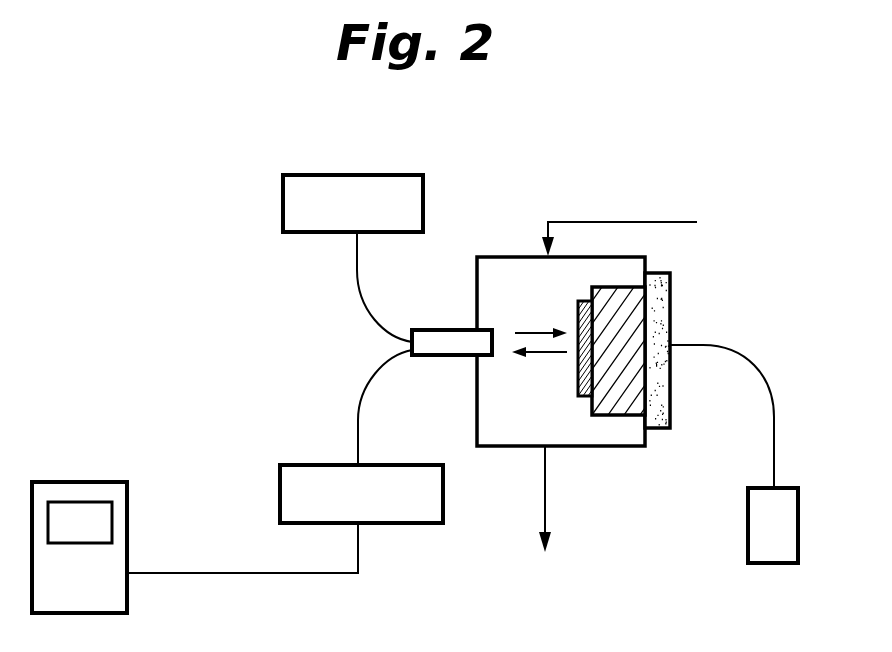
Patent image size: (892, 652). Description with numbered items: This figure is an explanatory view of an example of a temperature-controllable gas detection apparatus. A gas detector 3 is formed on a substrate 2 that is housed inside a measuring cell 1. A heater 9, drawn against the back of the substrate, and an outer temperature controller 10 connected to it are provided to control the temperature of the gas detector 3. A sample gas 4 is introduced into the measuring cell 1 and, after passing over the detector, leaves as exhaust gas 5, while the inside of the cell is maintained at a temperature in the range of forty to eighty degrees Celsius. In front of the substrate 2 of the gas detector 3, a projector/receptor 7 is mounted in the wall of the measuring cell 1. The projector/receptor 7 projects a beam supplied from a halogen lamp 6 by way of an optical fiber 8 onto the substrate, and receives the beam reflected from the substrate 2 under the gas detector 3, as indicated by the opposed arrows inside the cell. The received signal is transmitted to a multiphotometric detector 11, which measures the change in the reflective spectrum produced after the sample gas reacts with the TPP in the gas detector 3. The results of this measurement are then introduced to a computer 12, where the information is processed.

The measuring cell 1 is at (622, 465).
The substrate 2 is at (607, 416).
The detector 3 is at (578, 303).
The sample gas 4 is at (610, 222).
The exhaust gas 5 is at (543, 515).
The halogen lamp 6 is at (283, 207).
The projector/receptor 7 is at (440, 330).
The optical fiber 8 is at (365, 297).
The heater 9 is at (672, 293).
The outer temperature controller 10 is at (748, 547).
The multiphotometric detector 11 is at (280, 488).
The computer 12 is at (127, 599).